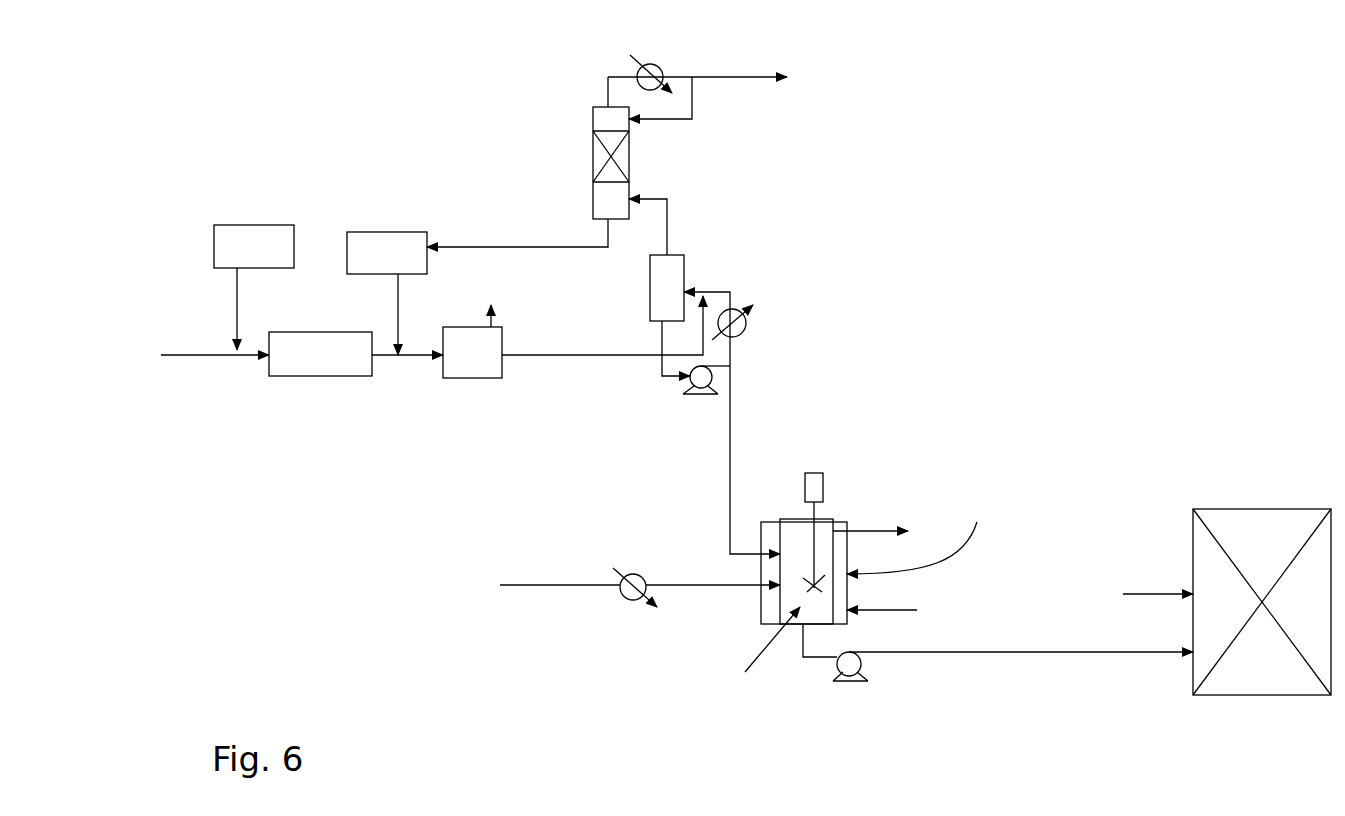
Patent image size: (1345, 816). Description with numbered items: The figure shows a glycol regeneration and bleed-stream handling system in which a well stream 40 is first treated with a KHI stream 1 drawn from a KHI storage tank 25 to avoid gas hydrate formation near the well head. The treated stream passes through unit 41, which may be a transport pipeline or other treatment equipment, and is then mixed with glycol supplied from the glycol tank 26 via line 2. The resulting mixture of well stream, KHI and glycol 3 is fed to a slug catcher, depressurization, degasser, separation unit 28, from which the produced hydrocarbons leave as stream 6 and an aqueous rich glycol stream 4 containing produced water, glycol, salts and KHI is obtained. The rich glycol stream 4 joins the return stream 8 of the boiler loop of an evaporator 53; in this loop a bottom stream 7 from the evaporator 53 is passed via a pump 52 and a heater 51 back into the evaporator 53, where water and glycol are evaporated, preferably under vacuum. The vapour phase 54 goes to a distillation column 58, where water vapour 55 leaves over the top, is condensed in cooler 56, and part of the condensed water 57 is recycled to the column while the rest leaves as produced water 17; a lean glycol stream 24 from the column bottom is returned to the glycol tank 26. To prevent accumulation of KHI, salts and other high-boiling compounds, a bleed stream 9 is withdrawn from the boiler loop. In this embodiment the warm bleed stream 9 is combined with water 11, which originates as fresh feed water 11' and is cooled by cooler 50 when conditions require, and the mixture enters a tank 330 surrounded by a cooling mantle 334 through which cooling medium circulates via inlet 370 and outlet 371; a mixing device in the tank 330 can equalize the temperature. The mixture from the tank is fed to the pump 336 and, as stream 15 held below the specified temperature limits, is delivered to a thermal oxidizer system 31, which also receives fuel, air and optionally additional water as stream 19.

The KHI storage tank 25 is at (254, 246).
The KHI stream 1 is at (231, 309).
The well stream 40 is at (206, 372).
The unit 41 is at (320, 354).
The glycol tank 26 is at (387, 253).
The line 2 is at (407, 314).
The mixture of well stream, KHI and glycol 3 is at (407, 374).
The slug catcher, depressurization, degasser, separation unit 28 is at (472, 352).
The stream 6 is at (500, 304).
The rich glycol stream 4 is at (602, 342).
The distillation column 58 is at (592, 163).
The water vapour 55 is at (591, 85).
The cooler 56 is at (651, 63).
The produced water 17 is at (701, 58).
The condensed water 57 is at (672, 115).
The vapour phase 54 is at (667, 222).
The lean glycol stream 24 is at (517, 234).
The evaporator 53 is at (667, 288).
The return stream 8 is at (713, 314).
The heater 51 is at (748, 328).
The bottom stream 7 is at (673, 362).
The pump 52 is at (706, 396).
The bleed stream 9 is at (755, 459).
The cooling mantle 334 is at (884, 558).
The tank 330 is at (770, 591).
The outlet 371 is at (876, 515).
The inlet 370 is at (893, 626).
The fresh feed water 11' is at (560, 573).
The cooler 50 is at (635, 578).
The water 11 is at (713, 573).
The pump 336 is at (838, 669).
The stream 15 is at (1021, 667).
The thermal oxidizer system 31 is at (1262, 602).
The stream 19 is at (1158, 583).